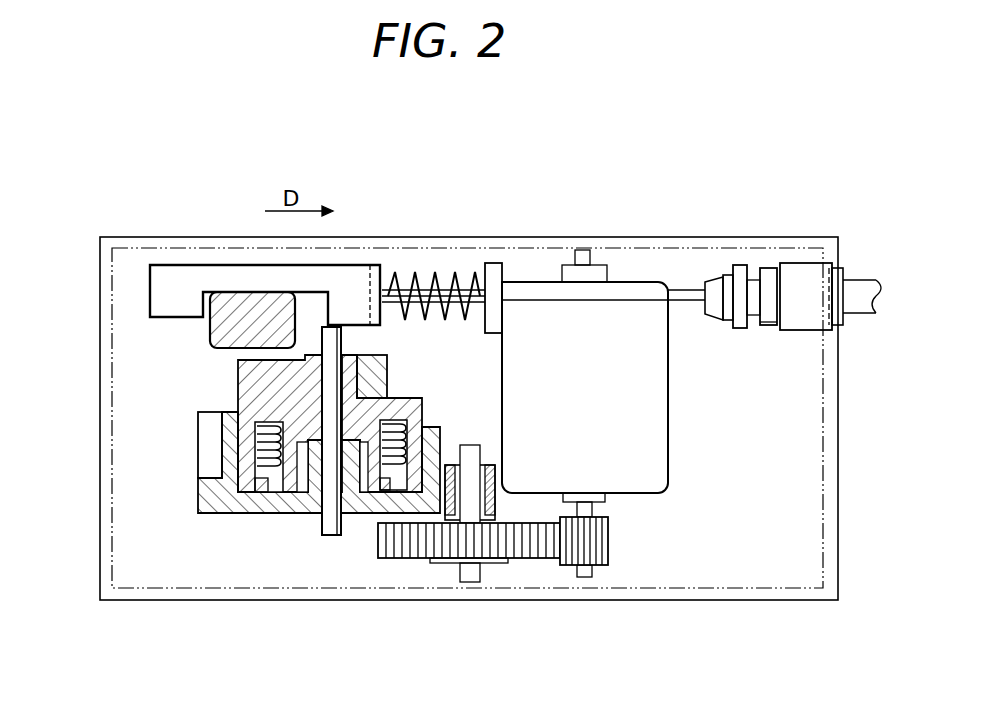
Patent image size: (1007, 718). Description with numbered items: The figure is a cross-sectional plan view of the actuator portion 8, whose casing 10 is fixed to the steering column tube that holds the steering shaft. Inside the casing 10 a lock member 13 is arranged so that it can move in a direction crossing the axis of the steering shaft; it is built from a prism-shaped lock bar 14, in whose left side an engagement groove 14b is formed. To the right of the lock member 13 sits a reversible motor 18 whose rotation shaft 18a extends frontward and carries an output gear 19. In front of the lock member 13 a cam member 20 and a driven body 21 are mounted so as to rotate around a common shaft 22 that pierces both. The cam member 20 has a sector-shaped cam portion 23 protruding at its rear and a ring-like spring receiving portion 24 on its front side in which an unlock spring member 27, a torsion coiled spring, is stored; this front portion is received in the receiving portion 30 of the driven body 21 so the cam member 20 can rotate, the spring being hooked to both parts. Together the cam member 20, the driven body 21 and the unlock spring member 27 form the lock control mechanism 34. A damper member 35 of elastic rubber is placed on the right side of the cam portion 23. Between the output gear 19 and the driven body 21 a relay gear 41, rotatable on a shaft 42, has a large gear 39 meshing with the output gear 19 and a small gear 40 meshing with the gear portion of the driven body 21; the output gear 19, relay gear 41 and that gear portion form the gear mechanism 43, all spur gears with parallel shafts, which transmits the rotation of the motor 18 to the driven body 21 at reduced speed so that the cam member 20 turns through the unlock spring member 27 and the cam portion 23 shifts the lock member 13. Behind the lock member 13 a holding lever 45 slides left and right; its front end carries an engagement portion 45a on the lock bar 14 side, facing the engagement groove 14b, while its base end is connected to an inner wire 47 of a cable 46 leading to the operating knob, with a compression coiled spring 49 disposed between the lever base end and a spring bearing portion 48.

The actuator portion 8 is at (385, 213).
The casing 10 is at (753, 598).
The lock member 13 is at (200, 337).
The lock bar 14 is at (170, 275).
The engagement groove 14b is at (243, 292).
The reversible motor 18 is at (620, 450).
The rotation shaft 18a is at (582, 577).
The output gear 19 is at (610, 538).
The cam member 20 is at (243, 427).
The driven body 21 is at (200, 488).
The shaft 22 is at (317, 535).
The cam portion 23 is at (180, 494).
The spring receiving portion 24 is at (405, 433).
The unlock spring member 27 is at (262, 475).
The receiving portion 30 is at (225, 470).
The lock control mechanism 34 is at (186, 509).
The damper member 35 is at (387, 373).
The large gear 39 is at (440, 560).
The small gear 40 is at (495, 480).
The relay gear 41 is at (400, 563).
The shaft 42 is at (468, 582).
The gear mechanism 43 is at (522, 556).
The holding lever 45 is at (204, 254).
The engagement portion 45a is at (192, 313).
The cable 46 is at (870, 278).
The inner wire 47 is at (687, 292).
The spring bearing portion 48 is at (497, 263).
The compression coiled spring 49 is at (425, 282).